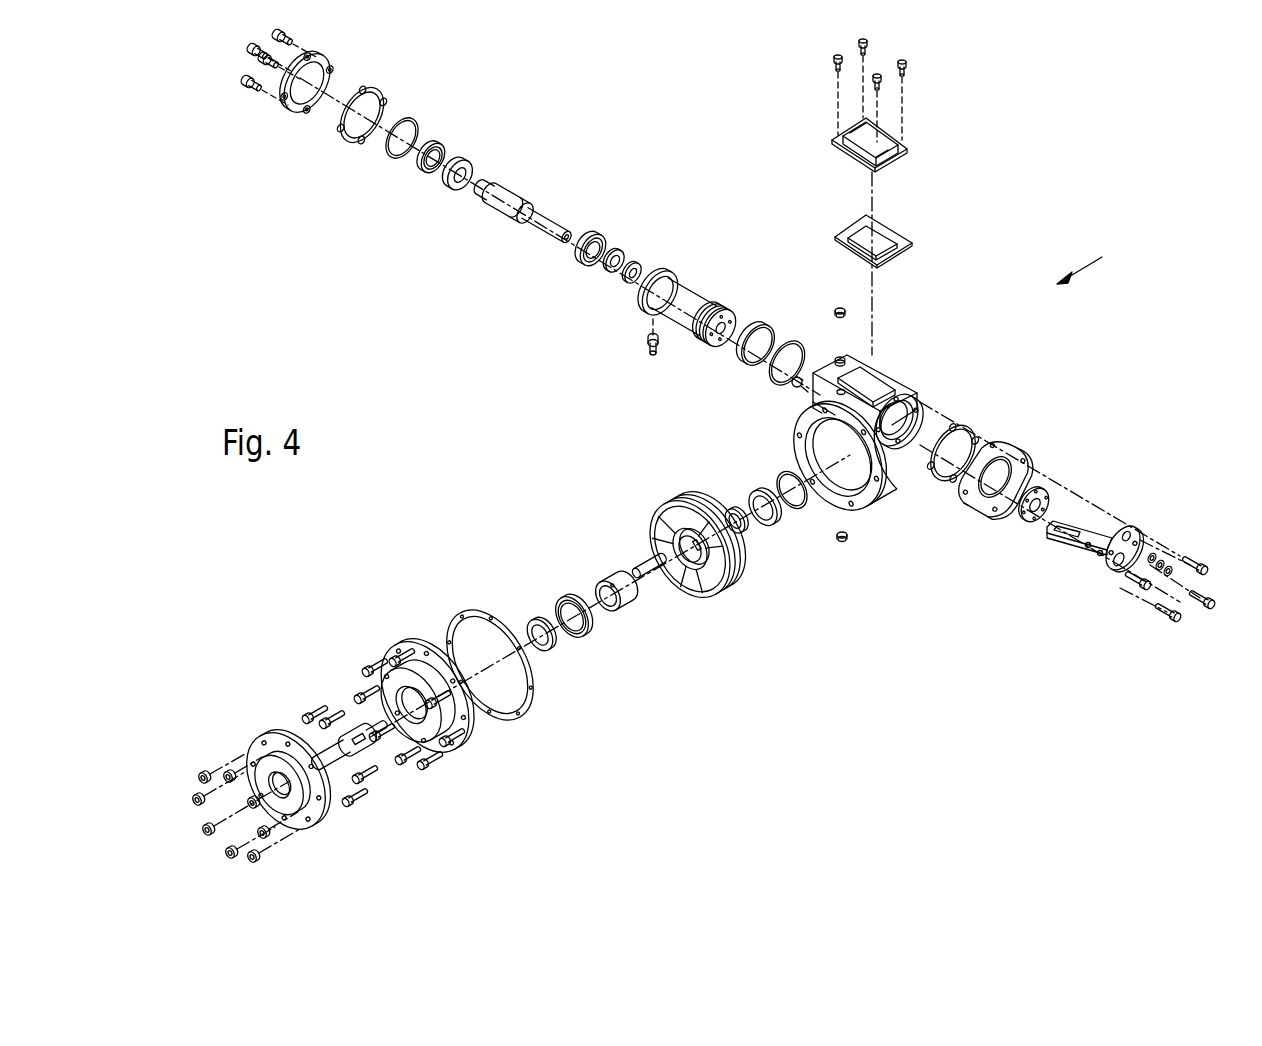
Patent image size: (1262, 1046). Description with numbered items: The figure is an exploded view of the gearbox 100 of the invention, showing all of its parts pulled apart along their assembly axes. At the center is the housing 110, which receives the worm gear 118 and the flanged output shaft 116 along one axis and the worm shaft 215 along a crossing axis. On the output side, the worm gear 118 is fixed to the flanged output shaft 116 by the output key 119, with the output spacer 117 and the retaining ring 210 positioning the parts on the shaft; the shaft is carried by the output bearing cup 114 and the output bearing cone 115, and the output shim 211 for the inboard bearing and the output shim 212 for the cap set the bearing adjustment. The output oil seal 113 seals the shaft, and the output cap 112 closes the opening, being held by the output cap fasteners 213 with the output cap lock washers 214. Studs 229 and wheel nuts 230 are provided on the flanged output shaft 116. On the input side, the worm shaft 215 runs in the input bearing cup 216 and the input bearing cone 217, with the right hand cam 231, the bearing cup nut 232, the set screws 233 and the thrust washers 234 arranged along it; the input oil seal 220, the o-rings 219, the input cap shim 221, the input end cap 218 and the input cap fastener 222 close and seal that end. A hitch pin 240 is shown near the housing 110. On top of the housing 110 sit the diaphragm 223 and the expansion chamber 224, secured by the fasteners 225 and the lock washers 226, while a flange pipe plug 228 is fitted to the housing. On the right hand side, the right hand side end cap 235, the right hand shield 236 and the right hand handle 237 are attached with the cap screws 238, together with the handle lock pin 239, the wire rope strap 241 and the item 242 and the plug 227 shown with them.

The gearbox 100 is at (1102, 261).
The housing 110 is at (893, 490).
The output cap 112 is at (403, 650).
The output oil seal 113 is at (543, 652).
The output bearing cup 114 is at (642, 637).
The output bearing cone 115 is at (583, 637).
The flanged output shaft 116 is at (325, 820).
The output spacer 117 is at (603, 585).
The worm gear 118 is at (690, 595).
The output key 119 is at (640, 565).
The retaining ring 210 is at (730, 512).
The output shim for the inboard bearing 211 is at (797, 512).
The output shim for the cap 212 is at (527, 710).
The output cap fasteners 213 is at (437, 765).
The output cap lock washers 214 is at (466, 742).
The worm shaft 215 is at (497, 210).
The input bearing cup 216 is at (527, 263).
The input bearing cone 217 is at (585, 273).
The input end cap 218 is at (290, 110).
The o-rings 219 is at (748, 355).
The input oil seal 220 is at (610, 278).
The input cap shim 221 is at (345, 138).
The input cap fastener 222 is at (247, 86).
The diaphragm 223 is at (900, 247).
The expansion chamber 224 is at (893, 157).
The fasteners 225 is at (832, 62).
The lock washers 226 is at (905, 74).
The plug 227 is at (838, 306).
The flange pipe plug 228 is at (845, 540).
The studs 229 is at (368, 782).
The wheel nuts 230 is at (195, 800).
The right hand cam 231 is at (650, 305).
The bearing cup nut 232 is at (427, 177).
The set screws 233 is at (652, 355).
The thrust washers 234 is at (392, 160).
The right hand side end cap 235 is at (1013, 447).
The right hand shield 236 is at (1043, 490).
The right hand handle 237 is at (1073, 543).
The cap screws 238 is at (1150, 555).
The handle lock pin 239 is at (1044, 607).
The hitch pin 240 is at (793, 388).
The wire rope strap 241 is at (1044, 607).
The washer 242 is at (1140, 590).